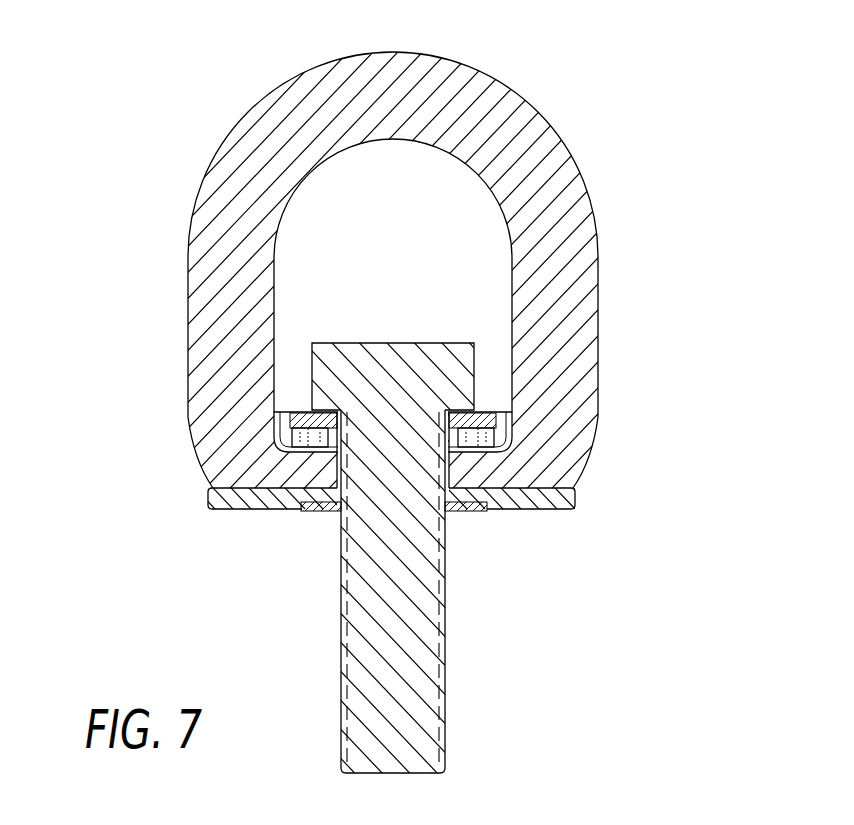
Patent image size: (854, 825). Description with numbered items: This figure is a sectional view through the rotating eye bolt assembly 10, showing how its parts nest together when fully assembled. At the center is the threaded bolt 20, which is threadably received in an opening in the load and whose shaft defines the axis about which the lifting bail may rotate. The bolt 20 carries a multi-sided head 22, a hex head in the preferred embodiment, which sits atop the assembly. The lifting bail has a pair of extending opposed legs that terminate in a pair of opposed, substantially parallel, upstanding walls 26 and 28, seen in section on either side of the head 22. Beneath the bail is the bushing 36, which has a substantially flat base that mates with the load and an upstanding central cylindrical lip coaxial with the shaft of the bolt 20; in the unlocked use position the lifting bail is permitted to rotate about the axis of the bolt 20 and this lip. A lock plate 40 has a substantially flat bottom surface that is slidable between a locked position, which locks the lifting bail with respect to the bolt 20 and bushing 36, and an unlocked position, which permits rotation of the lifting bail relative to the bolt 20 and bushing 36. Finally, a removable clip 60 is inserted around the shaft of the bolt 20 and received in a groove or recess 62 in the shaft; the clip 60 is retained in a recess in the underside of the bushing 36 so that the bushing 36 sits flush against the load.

The rotating eye bolt assembly 10 is at (623, 75).
The threaded bolt 20 is at (377, 608).
The multi-sided head 22 is at (395, 365).
The upstanding wall 26 is at (275, 425).
The upstanding wall 28 is at (512, 428).
The bushing 36 is at (543, 508).
The lock plate 40 is at (285, 413).
The removable clip 60 is at (460, 512).
The groove or recess 62 is at (330, 508).